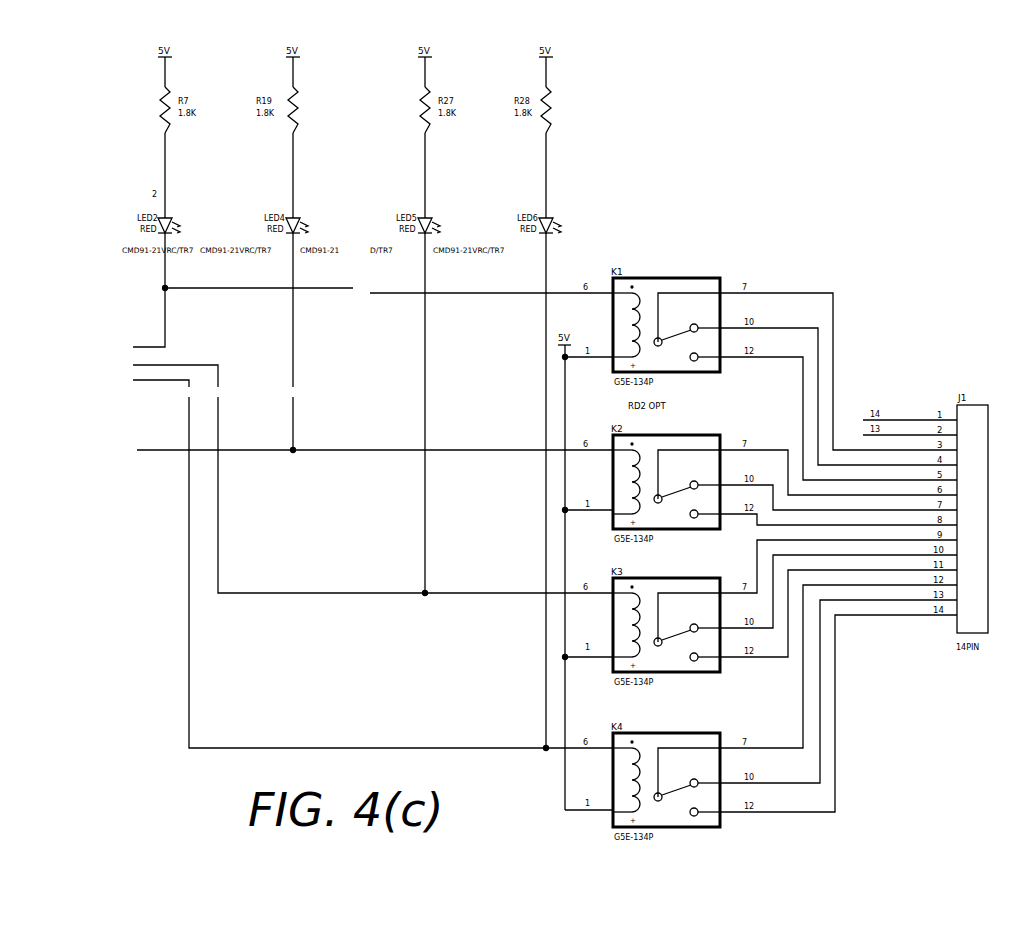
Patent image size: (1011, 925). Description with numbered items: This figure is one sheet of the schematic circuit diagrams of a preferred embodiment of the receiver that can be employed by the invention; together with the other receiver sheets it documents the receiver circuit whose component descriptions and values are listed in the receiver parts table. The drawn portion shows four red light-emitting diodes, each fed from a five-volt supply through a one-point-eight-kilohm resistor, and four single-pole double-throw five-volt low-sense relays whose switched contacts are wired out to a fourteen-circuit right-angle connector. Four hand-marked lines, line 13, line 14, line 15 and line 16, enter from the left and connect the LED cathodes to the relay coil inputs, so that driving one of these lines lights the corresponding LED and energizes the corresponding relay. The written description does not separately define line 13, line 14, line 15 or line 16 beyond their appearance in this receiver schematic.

The control line 13 is at (373, 558).
The control line 14 is at (373, 472).
The control line 15 is at (375, 441).
The control line 16 is at (149, 317).